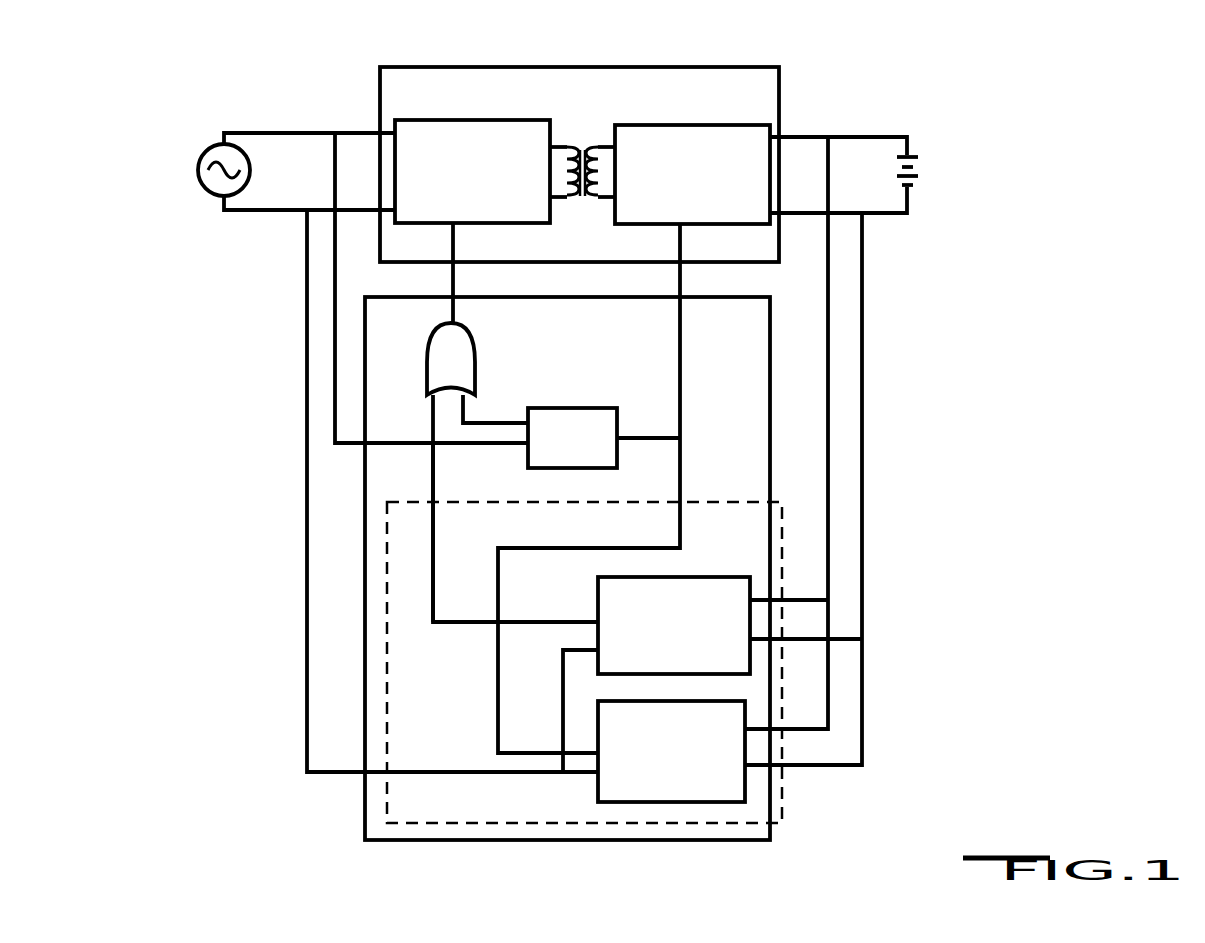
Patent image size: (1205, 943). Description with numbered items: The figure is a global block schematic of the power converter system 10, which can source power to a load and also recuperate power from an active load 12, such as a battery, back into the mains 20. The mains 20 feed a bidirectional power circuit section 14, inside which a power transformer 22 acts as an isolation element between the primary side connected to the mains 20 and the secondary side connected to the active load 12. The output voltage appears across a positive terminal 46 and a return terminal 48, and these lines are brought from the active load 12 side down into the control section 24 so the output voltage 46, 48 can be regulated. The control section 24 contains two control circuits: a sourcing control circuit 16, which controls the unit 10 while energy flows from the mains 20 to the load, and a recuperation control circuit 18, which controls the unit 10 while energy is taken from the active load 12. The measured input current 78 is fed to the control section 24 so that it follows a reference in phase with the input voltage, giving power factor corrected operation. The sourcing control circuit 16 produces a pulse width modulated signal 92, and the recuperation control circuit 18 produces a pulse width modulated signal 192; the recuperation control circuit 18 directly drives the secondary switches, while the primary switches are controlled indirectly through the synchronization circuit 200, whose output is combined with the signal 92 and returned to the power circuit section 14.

The power converter system 10 is at (1040, 137).
The active load 12 is at (922, 173).
The bidirectional power circuit section 14 is at (550, 142).
The sourcing control circuit 16 is at (752, 585).
The recuperation control circuit 18 is at (748, 782).
The mains 20 is at (203, 152).
The power transformer 22 is at (583, 150).
The control section 24 is at (583, 486).
The output voltage (positive) 46 is at (831, 165).
The output voltage (return) 48 is at (865, 297).
The input current 78 is at (412, 443).
The pulse width modulated signal 92 is at (458, 612).
The pulse width modulated signal 192 is at (538, 548).
The synchronization circuit 200 is at (566, 418).